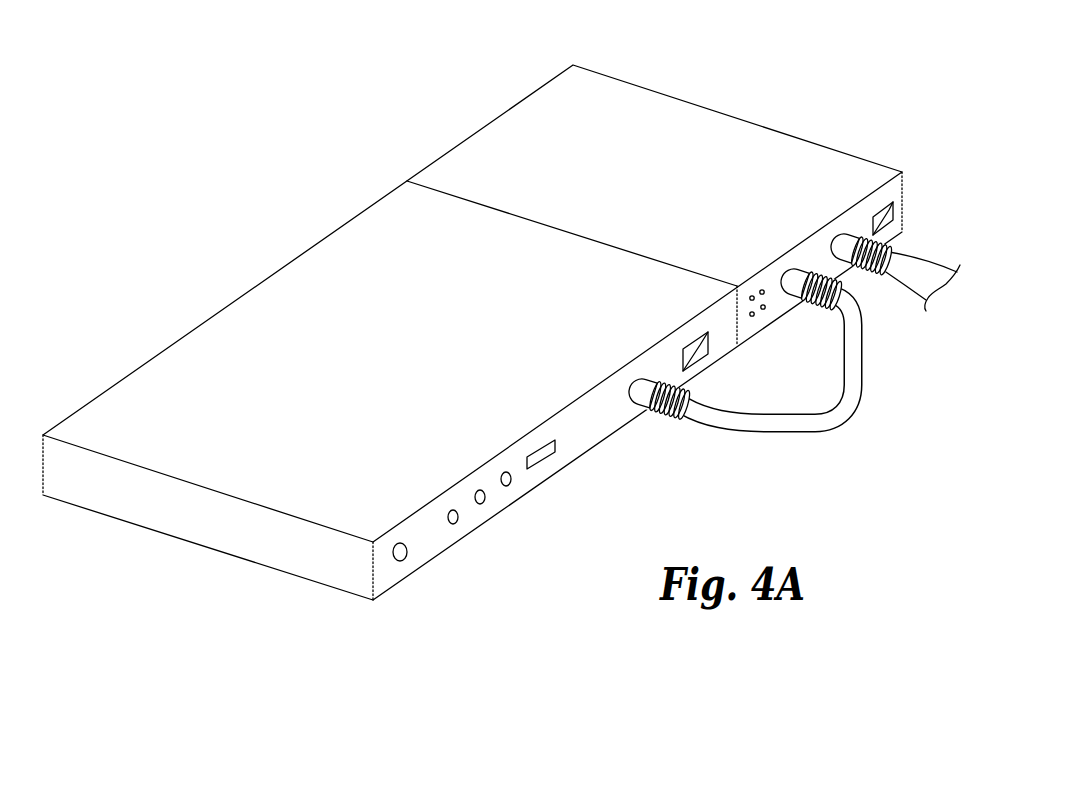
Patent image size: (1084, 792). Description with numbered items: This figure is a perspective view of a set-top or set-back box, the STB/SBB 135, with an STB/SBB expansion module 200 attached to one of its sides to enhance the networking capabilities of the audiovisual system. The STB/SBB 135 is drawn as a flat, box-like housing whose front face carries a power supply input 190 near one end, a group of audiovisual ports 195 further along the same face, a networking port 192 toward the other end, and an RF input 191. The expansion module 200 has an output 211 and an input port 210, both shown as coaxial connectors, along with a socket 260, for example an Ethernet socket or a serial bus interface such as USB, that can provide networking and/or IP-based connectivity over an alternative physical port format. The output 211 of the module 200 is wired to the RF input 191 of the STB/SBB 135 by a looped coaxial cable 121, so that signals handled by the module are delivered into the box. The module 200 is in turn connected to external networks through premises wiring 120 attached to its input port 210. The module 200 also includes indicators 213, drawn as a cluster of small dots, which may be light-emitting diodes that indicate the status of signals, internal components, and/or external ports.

The STB/SBB expansion module 200 is at (479, 80).
The STB/SBB 135 is at (296, 422).
The socket 260 is at (883, 207).
The input port 210 is at (845, 245).
The output 211 is at (792, 278).
The premises wiring 120 is at (918, 276).
The coaxial cable 121 is at (840, 412).
The indicators 213 is at (762, 307).
The networking port 192 is at (697, 355).
The RF input 191 is at (643, 392).
The audiovisual ports 195 is at (530, 514).
The power supply input 190 is at (400, 556).